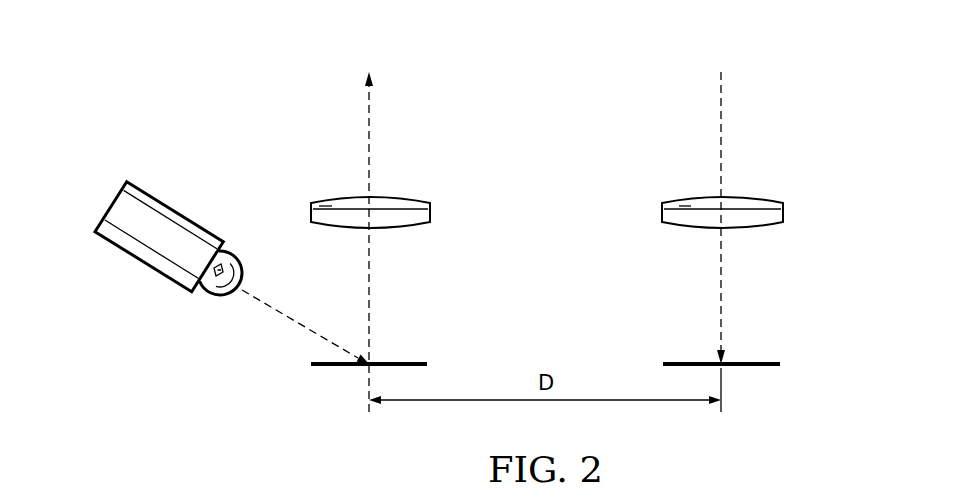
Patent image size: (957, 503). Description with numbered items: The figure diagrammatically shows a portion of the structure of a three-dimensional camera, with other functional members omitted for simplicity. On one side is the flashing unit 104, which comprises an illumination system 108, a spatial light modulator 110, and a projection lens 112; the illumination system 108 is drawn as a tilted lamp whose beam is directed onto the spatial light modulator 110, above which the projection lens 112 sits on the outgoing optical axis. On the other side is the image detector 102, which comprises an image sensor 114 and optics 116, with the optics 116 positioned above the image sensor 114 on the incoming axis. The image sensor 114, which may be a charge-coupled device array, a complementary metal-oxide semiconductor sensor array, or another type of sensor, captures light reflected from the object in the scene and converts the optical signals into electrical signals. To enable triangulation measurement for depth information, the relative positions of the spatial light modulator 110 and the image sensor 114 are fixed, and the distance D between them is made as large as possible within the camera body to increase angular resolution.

The image detector 102 is at (823, 66).
The flashing unit 104 is at (268, 66).
The illumination system 108 is at (140, 267).
The spatial light modulator 110 is at (335, 367).
The projection lens 112 is at (337, 198).
The image sensor 114 is at (757, 367).
The optics 116 is at (753, 198).